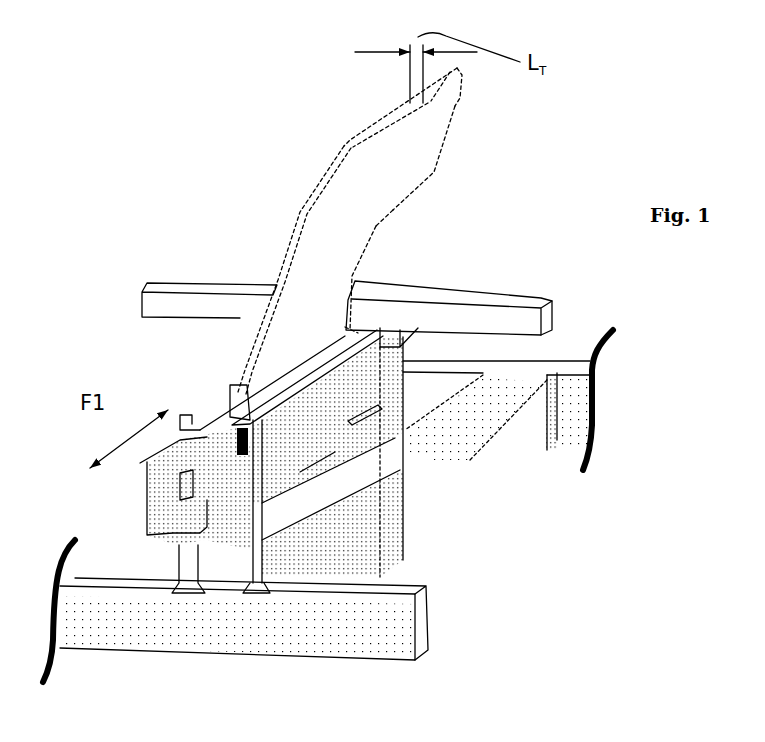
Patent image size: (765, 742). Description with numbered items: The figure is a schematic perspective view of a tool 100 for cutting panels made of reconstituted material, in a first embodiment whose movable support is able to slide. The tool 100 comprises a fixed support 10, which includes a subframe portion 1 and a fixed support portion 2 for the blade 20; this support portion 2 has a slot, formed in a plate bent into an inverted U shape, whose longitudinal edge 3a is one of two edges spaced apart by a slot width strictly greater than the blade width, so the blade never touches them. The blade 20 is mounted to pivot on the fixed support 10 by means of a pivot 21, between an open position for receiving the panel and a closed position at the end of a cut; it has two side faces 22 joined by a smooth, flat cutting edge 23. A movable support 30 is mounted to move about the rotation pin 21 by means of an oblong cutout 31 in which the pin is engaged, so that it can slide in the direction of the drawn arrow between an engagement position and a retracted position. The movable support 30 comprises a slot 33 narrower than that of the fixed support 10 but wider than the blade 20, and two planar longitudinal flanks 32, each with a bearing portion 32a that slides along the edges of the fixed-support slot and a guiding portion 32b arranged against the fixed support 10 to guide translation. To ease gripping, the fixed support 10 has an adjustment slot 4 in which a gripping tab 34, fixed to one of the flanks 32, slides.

The tool 100 is at (222, 218).
The subframe portion 1 is at (510, 370).
The fixed support 10 is at (536, 431).
The fixed support portion 2 is at (380, 382).
The blade 20 is at (430, 145).
The pivot 21 is at (372, 385).
The side faces 22 is at (340, 215).
The cutting edge 23 is at (385, 213).
The longitudinal edge 3a is at (350, 330).
The adjustment slot 4 is at (366, 429).
The movable support 30 is at (220, 478).
The cutout 31 is at (208, 466).
The planar longitudinal flanks 32 is at (175, 520).
The bearing portion 32a is at (181, 403).
The guiding portion 32b is at (192, 500).
The slot 33 is at (347, 316).
The gripping tab 34 is at (224, 447).